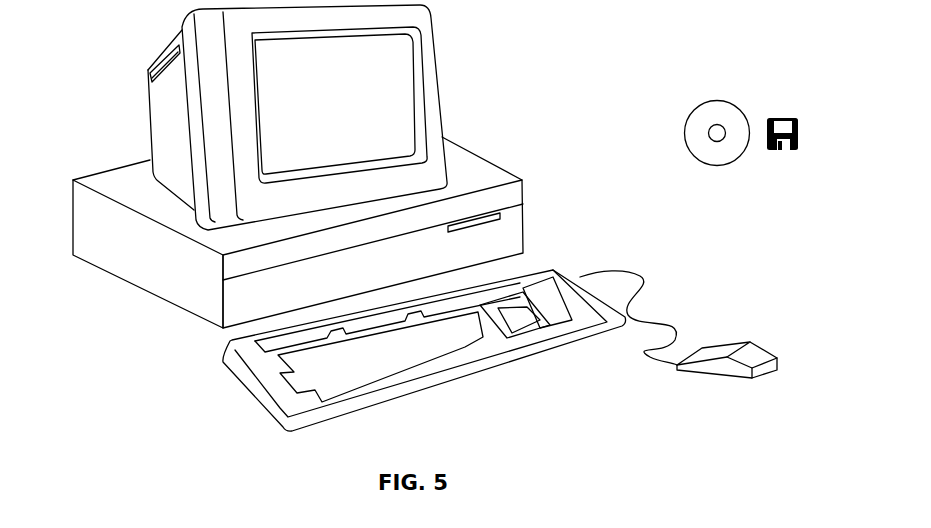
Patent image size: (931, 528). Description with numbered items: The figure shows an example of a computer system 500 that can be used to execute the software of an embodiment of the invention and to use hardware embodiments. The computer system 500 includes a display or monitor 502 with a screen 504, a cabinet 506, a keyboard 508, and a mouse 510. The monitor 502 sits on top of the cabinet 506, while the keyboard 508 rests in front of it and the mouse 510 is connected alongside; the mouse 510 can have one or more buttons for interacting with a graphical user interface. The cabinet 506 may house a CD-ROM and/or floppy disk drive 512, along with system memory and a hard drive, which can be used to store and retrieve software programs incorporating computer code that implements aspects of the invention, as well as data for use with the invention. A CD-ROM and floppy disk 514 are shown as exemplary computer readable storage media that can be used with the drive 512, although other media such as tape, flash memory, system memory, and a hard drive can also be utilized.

The computer system 500 is at (660, 27).
The monitor 502 is at (443, 110).
The screen 504 is at (408, 53).
The cabinet 506 is at (190, 314).
The keyboard 508 is at (432, 388).
The mouse 510 is at (762, 348).
The CD-ROM and/or floppy disk drive 512 is at (500, 213).
The CD-ROM and floppy disk 514 is at (770, 74).